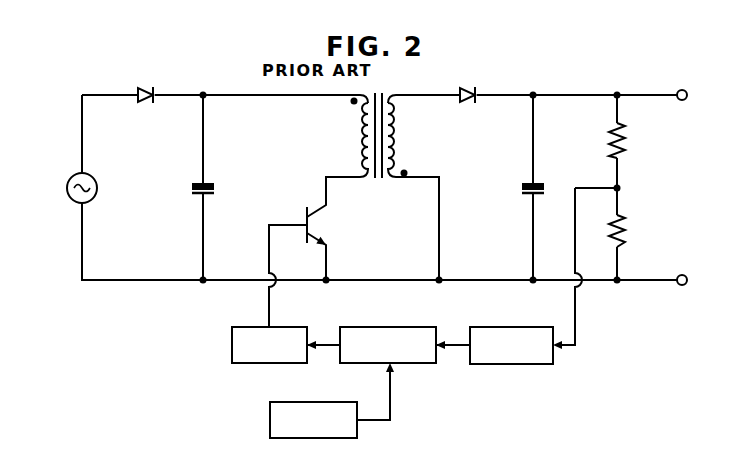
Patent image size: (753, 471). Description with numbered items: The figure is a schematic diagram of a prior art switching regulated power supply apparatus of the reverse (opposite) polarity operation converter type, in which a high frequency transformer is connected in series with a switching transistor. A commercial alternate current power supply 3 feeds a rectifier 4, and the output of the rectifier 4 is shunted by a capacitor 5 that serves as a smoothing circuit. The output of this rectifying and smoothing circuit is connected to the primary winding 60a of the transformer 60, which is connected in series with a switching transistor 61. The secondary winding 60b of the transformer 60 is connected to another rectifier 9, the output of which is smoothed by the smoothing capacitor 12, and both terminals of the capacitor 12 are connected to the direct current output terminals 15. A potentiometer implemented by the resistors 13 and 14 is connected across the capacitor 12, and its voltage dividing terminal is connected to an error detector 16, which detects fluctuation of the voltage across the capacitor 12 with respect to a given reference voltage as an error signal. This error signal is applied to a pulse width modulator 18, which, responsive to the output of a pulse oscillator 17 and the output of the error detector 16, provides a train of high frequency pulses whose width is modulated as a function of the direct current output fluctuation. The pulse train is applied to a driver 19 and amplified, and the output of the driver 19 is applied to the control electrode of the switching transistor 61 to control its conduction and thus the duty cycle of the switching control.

The commercial alternate current power supply 3 is at (72, 200).
The rectifier 4 is at (146, 88).
The capacitor 5 is at (198, 195).
The rectifier 9 is at (470, 88).
The smoothing capacitor 12 is at (524, 195).
The resistor 13 is at (628, 140).
The resistor 14 is at (628, 226).
The direct current output terminals 15 is at (681, 89).
The error detector 16 is at (531, 366).
The pulse oscillator 17 is at (270, 420).
The pulse width modulator 18 is at (420, 366).
The driver 19 is at (232, 327).
The transformer 60 is at (380, 184).
The primary winding 60a is at (358, 140).
The secondary winding 60b is at (400, 140).
The switching transistor 61 is at (305, 212).